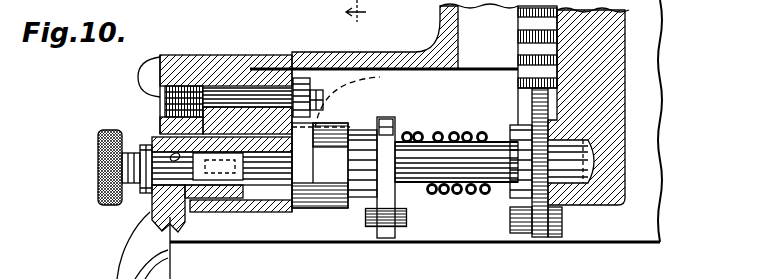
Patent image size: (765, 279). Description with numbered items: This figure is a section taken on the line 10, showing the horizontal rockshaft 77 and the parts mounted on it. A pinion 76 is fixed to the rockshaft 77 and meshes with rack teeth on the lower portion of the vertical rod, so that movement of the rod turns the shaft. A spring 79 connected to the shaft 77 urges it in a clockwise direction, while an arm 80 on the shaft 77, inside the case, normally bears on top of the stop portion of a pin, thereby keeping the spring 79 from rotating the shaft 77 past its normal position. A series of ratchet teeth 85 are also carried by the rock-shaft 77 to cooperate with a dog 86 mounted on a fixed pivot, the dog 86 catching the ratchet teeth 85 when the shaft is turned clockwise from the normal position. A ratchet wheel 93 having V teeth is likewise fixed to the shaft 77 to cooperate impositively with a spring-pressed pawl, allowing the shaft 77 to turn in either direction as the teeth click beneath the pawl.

The section line 10 is at (356, 22).
The pinion 76 is at (543, 125).
The horizontal rockshaft 77 is at (408, 183).
The spring 79 is at (462, 193).
The arm 80 is at (334, 122).
The ratchet teeth 85 is at (360, 101).
The dog 86 is at (299, 78).
The ratchet wheel 93 is at (380, 224).